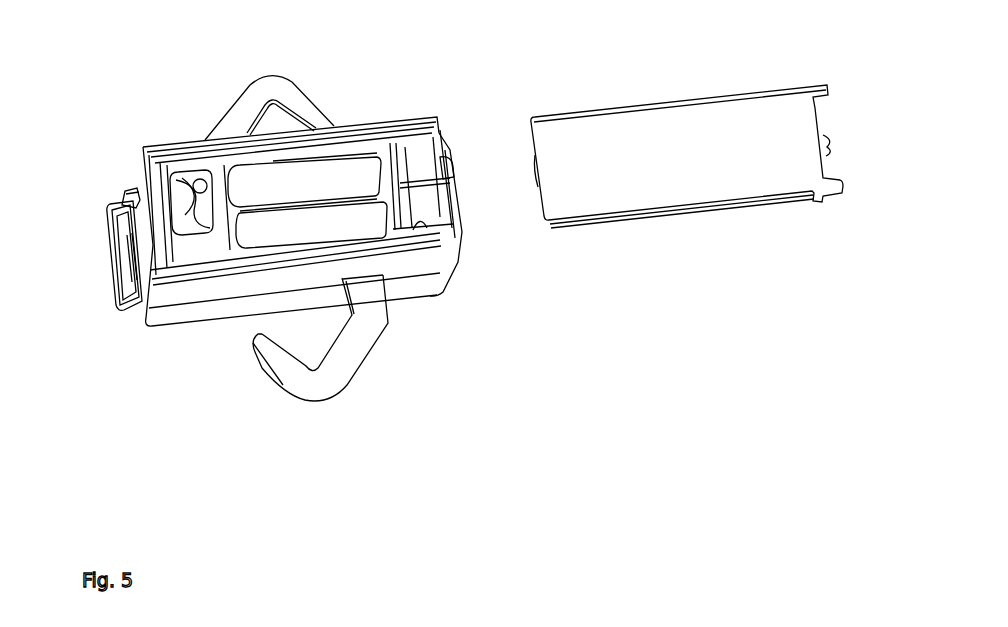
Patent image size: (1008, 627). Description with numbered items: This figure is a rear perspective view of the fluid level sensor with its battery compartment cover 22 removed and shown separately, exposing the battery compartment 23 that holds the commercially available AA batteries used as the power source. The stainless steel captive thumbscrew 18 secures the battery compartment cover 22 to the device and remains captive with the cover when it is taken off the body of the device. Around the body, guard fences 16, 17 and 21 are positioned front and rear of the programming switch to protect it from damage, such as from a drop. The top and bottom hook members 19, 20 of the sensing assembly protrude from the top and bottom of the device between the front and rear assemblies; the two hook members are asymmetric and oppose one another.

The guard fence 16 is at (116, 272).
The guard fence 17 is at (448, 150).
The stainless steel captive thumbscrew 18 is at (833, 141).
The top hook member 19 is at (327, 378).
The bottom hook member 20 is at (245, 95).
The guard fence 21 is at (128, 196).
The battery compartment cover 22 is at (713, 207).
The battery compartment 23 is at (222, 233).